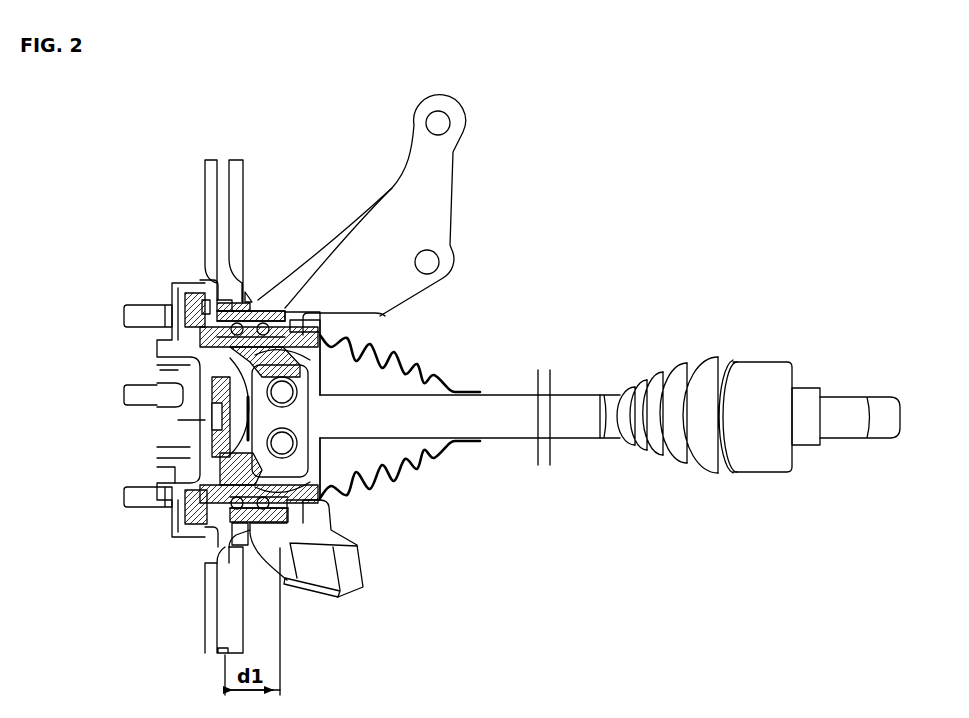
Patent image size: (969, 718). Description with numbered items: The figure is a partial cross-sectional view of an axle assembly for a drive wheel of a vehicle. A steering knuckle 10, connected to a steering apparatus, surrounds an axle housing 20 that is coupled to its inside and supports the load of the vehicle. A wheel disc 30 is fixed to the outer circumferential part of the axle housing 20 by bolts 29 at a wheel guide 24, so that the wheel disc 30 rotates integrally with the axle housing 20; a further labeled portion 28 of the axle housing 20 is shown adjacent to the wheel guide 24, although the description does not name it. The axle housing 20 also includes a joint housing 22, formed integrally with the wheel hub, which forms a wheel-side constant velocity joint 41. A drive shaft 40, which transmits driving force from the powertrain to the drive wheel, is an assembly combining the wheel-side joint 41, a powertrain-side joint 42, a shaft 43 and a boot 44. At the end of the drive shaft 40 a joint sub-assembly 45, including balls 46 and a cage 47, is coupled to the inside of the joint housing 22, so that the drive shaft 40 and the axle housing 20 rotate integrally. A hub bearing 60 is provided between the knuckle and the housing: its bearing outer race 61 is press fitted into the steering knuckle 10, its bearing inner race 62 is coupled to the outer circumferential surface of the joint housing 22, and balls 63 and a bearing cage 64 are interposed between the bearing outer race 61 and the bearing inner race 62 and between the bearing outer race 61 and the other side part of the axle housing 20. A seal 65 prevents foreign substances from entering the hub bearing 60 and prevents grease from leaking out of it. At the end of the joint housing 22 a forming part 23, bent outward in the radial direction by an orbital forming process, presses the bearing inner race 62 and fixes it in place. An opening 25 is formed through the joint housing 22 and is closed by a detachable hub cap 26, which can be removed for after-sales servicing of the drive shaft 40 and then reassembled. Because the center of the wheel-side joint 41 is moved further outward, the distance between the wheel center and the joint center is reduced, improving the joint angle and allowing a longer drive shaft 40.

The steering knuckle 10 is at (452, 185).
The axle housing 20 is at (172, 520).
The joint housing 22 is at (307, 512).
The forming part 23 is at (360, 347).
The wheel guide 24 is at (178, 458).
The opening 25 is at (205, 440).
The hub cap 26 is at (178, 377).
The pilot portion 28 is at (172, 357).
The bolts 29 is at (140, 312).
The wheel disc 30 is at (205, 182).
The drive shaft 40 is at (516, 393).
The wheel-side joint 41 is at (313, 425).
The powertrain-side joint 42 is at (753, 480).
The shaft 43 is at (417, 426).
The boot 44 is at (420, 370).
The joint sub-assembly 45 is at (62, 393).
The balls 46 is at (262, 440).
The cage 47 is at (275, 414).
The hub bearing 60 is at (277, 298).
The bearing outer race 61 is at (232, 295).
The bearing inner race 62 is at (295, 305).
The balls 63 is at (240, 535).
The bearing cage 64 is at (249, 300).
The seal 65 is at (213, 290).